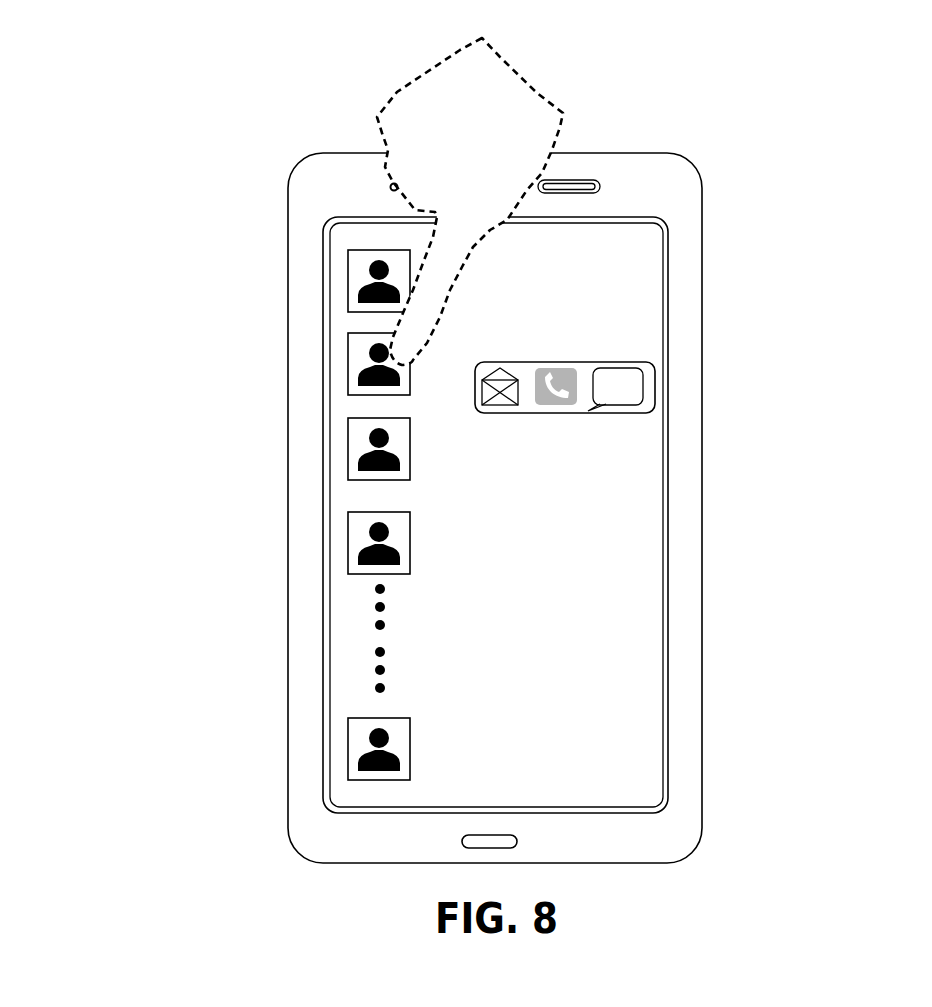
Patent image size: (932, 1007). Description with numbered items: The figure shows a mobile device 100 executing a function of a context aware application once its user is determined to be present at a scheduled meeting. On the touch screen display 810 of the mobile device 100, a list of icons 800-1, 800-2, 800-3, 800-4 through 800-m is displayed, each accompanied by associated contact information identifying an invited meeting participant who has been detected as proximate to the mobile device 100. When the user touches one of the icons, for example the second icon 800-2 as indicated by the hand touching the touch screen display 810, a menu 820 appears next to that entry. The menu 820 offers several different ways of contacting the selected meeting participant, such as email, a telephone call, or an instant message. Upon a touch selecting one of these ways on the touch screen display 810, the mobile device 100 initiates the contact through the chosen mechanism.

The mobile device 100 is at (668, 153).
The touch screen display 810 is at (711, 246).
The icon 800-1 is at (337, 280).
The icon 800-2 is at (337, 365).
The icon 800-3 is at (337, 452).
The icon 800-4 is at (337, 538).
The icon 800-m is at (337, 745).
The menu 820 is at (692, 280).